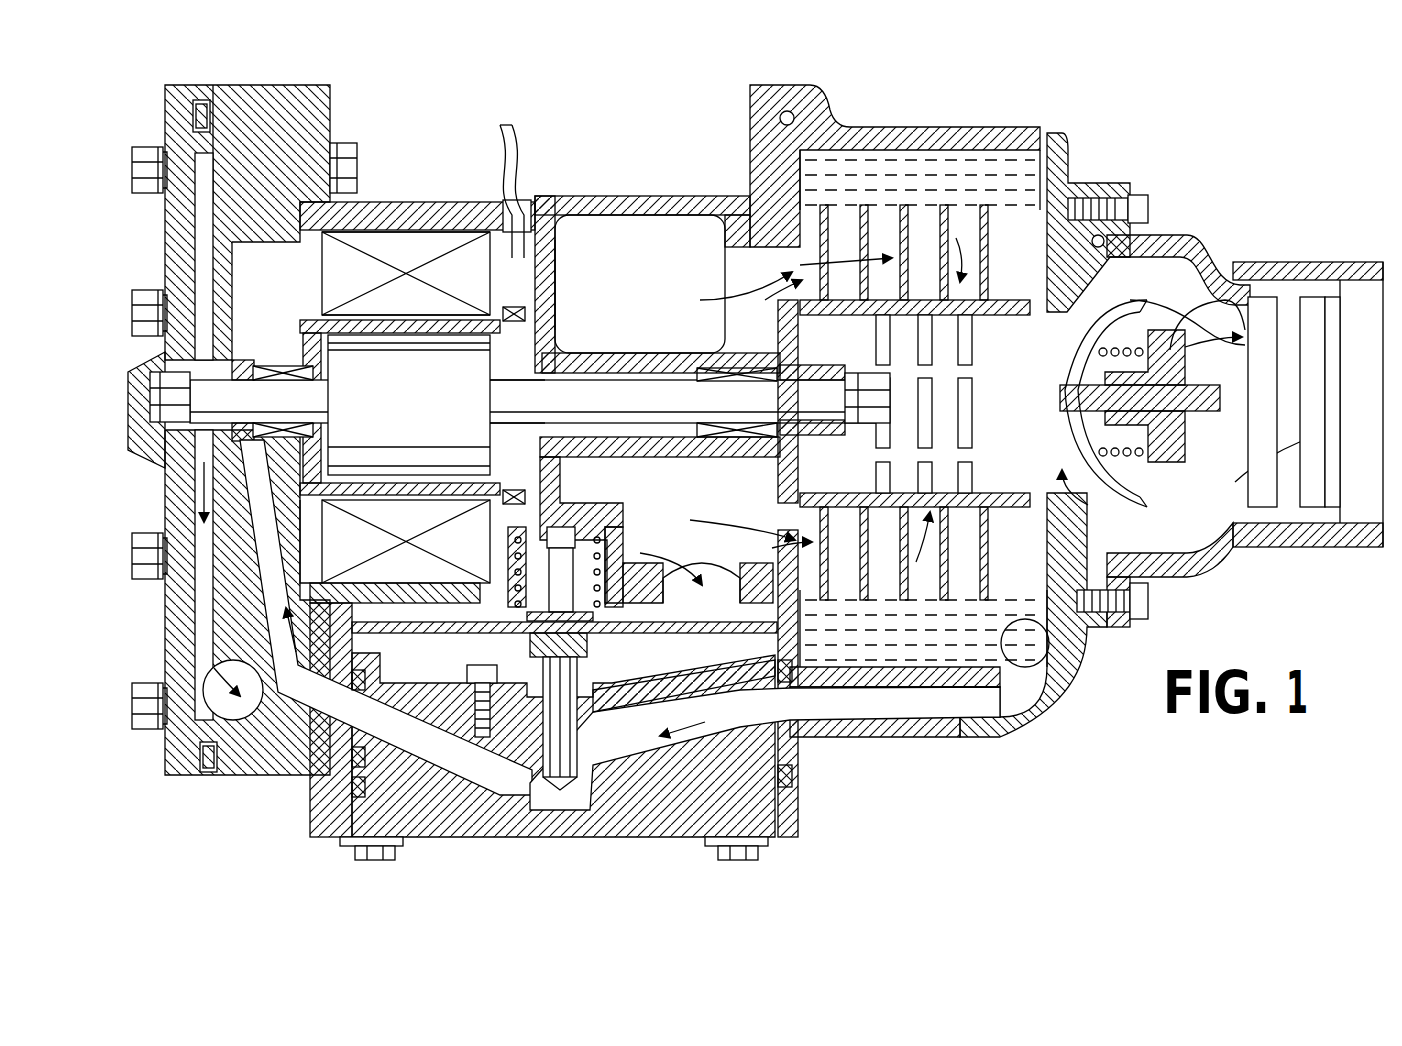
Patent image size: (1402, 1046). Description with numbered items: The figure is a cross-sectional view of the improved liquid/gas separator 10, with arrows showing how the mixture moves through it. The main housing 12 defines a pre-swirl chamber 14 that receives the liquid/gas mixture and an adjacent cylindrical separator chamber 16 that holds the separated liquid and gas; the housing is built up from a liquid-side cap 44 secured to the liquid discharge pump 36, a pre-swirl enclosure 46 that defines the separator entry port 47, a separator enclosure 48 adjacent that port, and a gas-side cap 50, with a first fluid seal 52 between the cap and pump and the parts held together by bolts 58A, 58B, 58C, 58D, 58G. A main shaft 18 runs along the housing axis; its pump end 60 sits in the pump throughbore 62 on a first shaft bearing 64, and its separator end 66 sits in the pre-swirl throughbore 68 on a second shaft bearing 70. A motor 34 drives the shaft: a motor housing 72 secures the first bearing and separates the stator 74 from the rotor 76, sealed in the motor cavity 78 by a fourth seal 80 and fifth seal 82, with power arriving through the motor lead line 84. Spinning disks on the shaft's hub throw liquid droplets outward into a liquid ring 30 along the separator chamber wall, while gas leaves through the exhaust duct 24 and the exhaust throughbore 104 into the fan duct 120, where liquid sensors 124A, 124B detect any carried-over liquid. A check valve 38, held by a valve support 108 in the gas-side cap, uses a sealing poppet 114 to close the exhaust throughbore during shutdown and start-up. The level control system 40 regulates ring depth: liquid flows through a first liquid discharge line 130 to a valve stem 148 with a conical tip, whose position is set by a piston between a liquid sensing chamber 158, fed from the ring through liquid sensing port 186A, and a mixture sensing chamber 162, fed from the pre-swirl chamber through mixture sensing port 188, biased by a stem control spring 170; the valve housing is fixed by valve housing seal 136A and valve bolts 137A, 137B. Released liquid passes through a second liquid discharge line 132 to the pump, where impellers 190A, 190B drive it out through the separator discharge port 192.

The liquid/gas separator 10 is at (580, 94).
The main housing 12 is at (735, 194).
The pre-swirl chamber 14 is at (632, 260).
The separator chamber 16 is at (1012, 174).
The main shaft 18 is at (577, 403).
The exhaust duct 24 is at (979, 363).
The liquid ring 30 is at (928, 165).
The motor 34 is at (400, 250).
The liquid discharge pump 36 is at (214, 228).
The check valve 38 is at (1127, 326).
The level control system 40 is at (656, 788).
The liquid-side cap 44 is at (165, 650).
The pre-swirl enclosure 46 is at (458, 228).
The separator entry port 47 is at (800, 302).
The separator enclosure 48 is at (880, 138).
The gas-side cap 50 is at (1203, 555).
The first fluid seal 52 is at (201, 112).
The bolt 58A is at (138, 172).
The bolt 58B is at (136, 316).
The bolt 58C is at (138, 554).
The bolt 58D is at (138, 708).
The bolt 58G is at (346, 160).
The pump end 60 is at (300, 384).
The pump throughbore 62 is at (206, 380).
The first shaft bearing 64 is at (320, 438).
The separator end 66 is at (653, 402).
The pre-swirl throughbore 68 is at (550, 434).
The second shaft bearing 70 is at (735, 448).
The motor housing 72 is at (314, 488).
The stator 74 is at (345, 266).
The rotor 76 is at (409, 396).
The motor cavity 78 is at (500, 449).
The fourth seal 80 is at (290, 350).
The fifth seal 82 is at (512, 323).
The motor lead line 84 is at (505, 138).
The exhaust throughbore 104 is at (1090, 508).
The valve support 108 is at (1172, 303).
The sealing poppet 114 is at (1078, 385).
The fan duct 120 is at (1345, 262).
The liquid sensor 124A is at (1262, 500).
The liquid sensor 124B is at (1312, 472).
The first liquid discharge line 130 is at (925, 720).
The second liquid discharge line 132 is at (275, 592).
The valve housing seal 136A is at (364, 786).
The valve bolt 137A is at (376, 861).
The valve bolt 137B is at (746, 861).
The valve stem 148 is at (565, 676).
The liquid sensing chamber 158 is at (398, 671).
The liquid/gas mixture sensing chamber 162 is at (440, 592).
The stem control spring 170 is at (684, 680).
The liquid sensing port 186A is at (784, 651).
The mixture sensing port 188 is at (666, 554).
The impeller 190A is at (203, 598).
The impeller 190B is at (203, 232).
The separator discharge port 192 is at (246, 710).